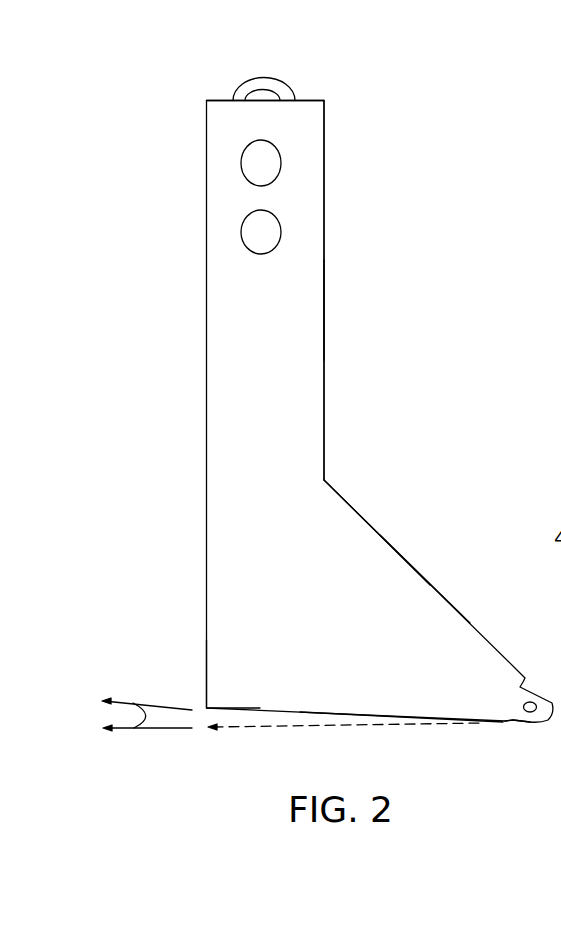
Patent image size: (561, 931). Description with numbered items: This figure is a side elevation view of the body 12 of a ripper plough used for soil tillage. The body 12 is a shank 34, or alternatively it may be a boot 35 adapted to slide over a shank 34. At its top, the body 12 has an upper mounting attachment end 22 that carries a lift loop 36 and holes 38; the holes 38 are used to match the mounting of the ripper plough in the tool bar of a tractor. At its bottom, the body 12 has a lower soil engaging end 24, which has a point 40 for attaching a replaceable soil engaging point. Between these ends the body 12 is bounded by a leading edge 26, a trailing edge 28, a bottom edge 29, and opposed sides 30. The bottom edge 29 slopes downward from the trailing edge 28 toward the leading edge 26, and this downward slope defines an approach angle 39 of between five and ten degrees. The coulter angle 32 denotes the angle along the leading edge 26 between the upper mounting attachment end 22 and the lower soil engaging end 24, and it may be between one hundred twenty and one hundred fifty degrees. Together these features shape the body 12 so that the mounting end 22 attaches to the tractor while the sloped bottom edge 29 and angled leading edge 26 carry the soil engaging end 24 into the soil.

The body 12 is at (324, 176).
The upper mounting attachment end 22 is at (311, 101).
The lower soil engaging end 24 is at (488, 722).
The leading edge 26 is at (503, 722).
The trailing edge 28 is at (247, 760).
The bottom edge 29 is at (400, 717).
The opposed sides 30 is at (329, 278).
The coulter angle 32 is at (383, 528).
The shank 34 is at (324, 225).
The boot 35 is at (412, 562).
The lift loop 36 is at (243, 85).
The holes 38 is at (241, 235).
The approach angle 39 is at (148, 705).
The point 40 is at (537, 700).